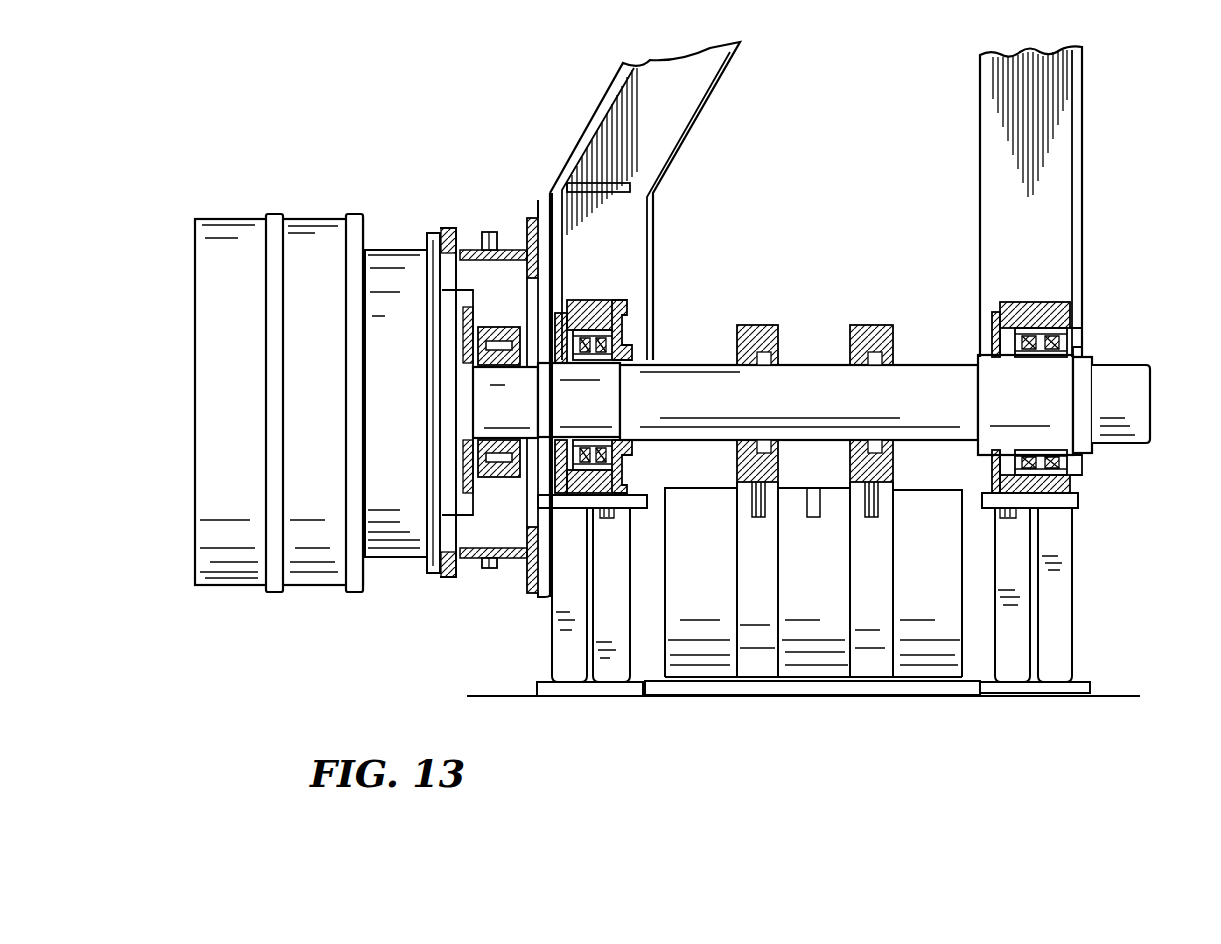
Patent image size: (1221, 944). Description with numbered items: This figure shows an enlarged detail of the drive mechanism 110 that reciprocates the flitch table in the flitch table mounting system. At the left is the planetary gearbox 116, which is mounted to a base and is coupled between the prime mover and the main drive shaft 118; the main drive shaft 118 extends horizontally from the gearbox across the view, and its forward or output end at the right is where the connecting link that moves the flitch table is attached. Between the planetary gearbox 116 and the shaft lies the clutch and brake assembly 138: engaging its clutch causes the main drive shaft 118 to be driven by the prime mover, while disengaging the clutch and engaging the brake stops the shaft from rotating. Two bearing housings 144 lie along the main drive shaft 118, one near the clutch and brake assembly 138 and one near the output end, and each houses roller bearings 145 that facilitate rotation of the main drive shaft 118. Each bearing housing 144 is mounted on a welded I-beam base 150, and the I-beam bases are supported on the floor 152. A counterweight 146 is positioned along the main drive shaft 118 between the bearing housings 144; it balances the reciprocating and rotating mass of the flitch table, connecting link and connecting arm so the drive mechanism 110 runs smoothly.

The drive mechanism 110 is at (325, 634).
The planetary gearbox 116 is at (242, 203).
The main drive shaft 118 is at (1132, 425).
The clutch and brake assembly 138 is at (485, 226).
The bearing housing 144 is at (602, 297).
The roller bearings 145 is at (563, 343).
The counterweight 146 is at (845, 662).
The welded I-beam base 150 is at (570, 643).
The floor 152 is at (500, 693).